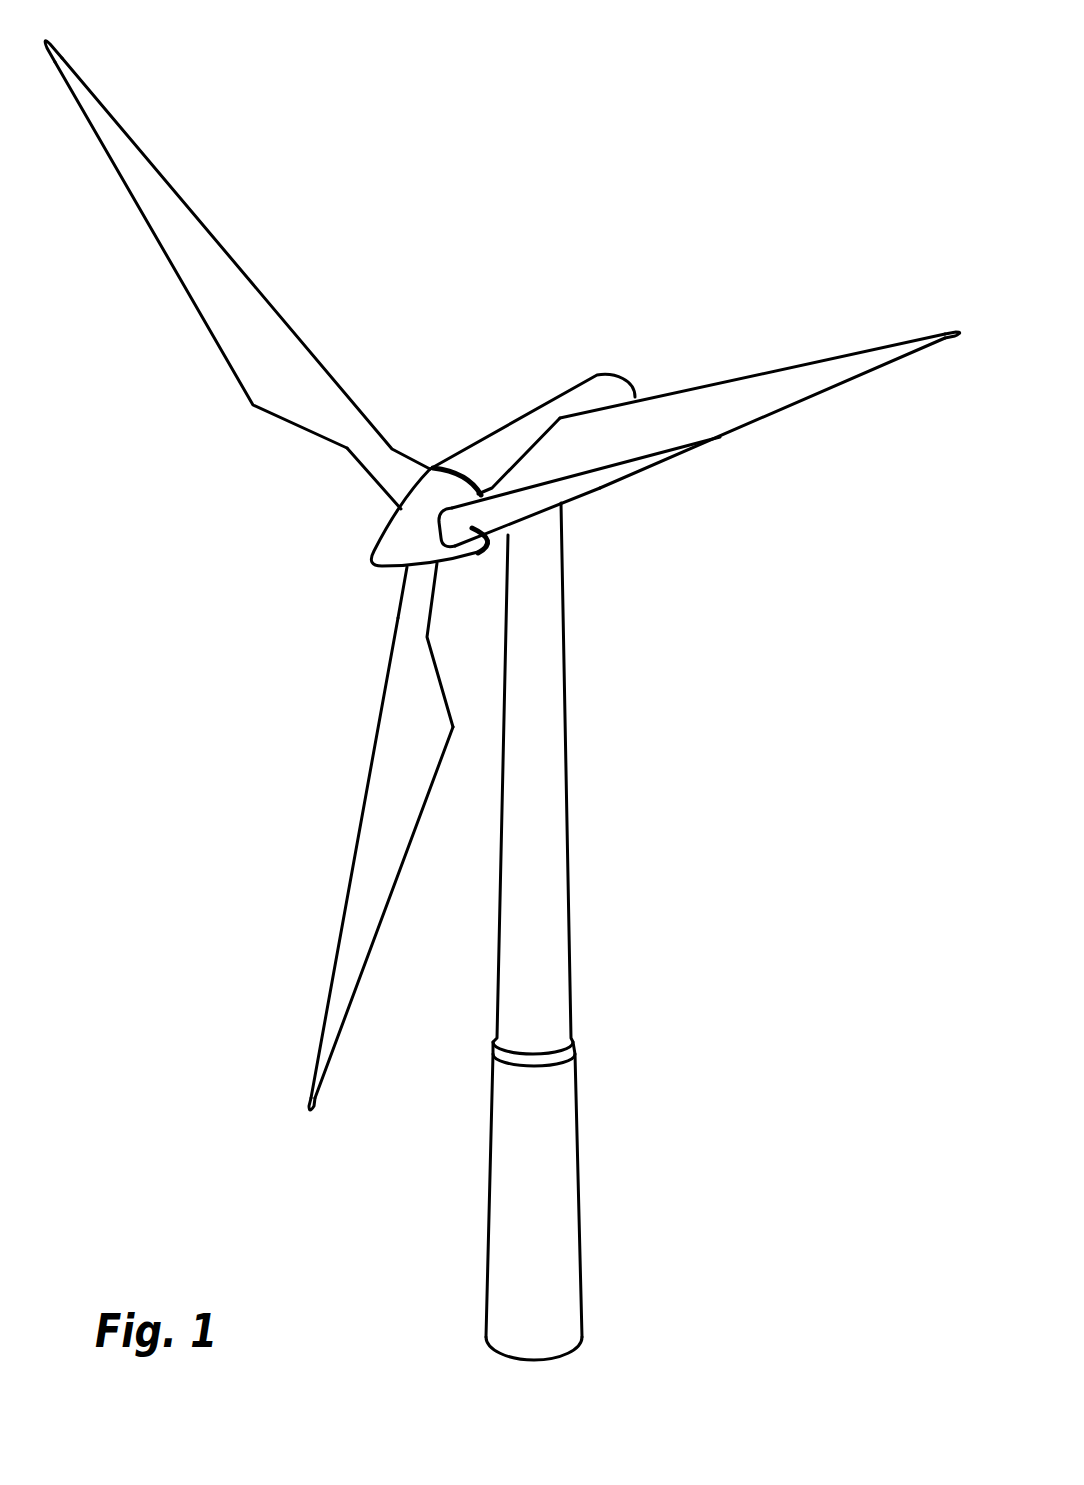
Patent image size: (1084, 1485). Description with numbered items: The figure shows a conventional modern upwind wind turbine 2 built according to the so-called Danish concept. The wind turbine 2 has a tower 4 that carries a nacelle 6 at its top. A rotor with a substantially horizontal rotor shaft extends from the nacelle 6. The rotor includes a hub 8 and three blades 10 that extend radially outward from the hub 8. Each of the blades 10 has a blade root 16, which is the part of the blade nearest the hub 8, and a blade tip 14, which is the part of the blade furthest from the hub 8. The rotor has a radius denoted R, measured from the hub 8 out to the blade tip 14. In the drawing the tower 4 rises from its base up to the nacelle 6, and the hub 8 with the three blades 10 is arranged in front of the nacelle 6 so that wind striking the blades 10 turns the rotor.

The wind turbine 2 is at (693, 865).
The tower 4 is at (553, 778).
The nacelle 6 is at (493, 445).
The hub 8 is at (392, 540).
The blades 10 is at (267, 372).
The blade tip 14 is at (92, 103).
The blade root 16 is at (400, 490).